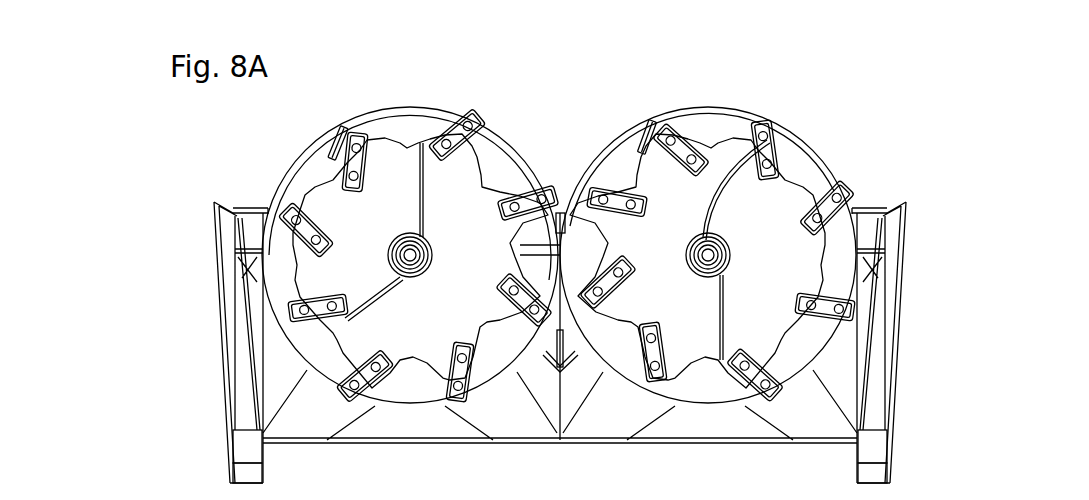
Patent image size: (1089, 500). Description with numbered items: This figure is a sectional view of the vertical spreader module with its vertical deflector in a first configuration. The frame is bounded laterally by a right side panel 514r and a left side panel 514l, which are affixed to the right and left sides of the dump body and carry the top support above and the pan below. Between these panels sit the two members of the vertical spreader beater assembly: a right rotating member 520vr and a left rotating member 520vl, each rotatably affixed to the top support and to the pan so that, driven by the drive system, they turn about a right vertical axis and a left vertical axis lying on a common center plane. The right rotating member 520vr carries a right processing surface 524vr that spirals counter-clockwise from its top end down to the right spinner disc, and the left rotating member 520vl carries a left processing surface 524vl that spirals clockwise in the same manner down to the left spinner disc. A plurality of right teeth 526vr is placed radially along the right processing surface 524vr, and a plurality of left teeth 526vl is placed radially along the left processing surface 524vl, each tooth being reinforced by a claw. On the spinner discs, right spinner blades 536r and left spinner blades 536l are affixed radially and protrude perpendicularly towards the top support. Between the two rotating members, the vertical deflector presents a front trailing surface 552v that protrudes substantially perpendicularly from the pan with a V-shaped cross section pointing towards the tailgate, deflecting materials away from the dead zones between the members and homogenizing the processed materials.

The right rotating member 520vr is at (297, 219).
The left rotating member 520vl is at (806, 218).
The right processing surface 524vr is at (453, 320).
The left processing surface 524vl is at (798, 275).
The right teeth 526vr is at (302, 262).
The left teeth 526vl is at (815, 248).
The right spinner blades 536r is at (332, 132).
The left spinner blades 536l is at (647, 127).
The right side panel 514r is at (222, 413).
The left side panel 514l is at (907, 328).
The front trailing surface 552v is at (565, 367).